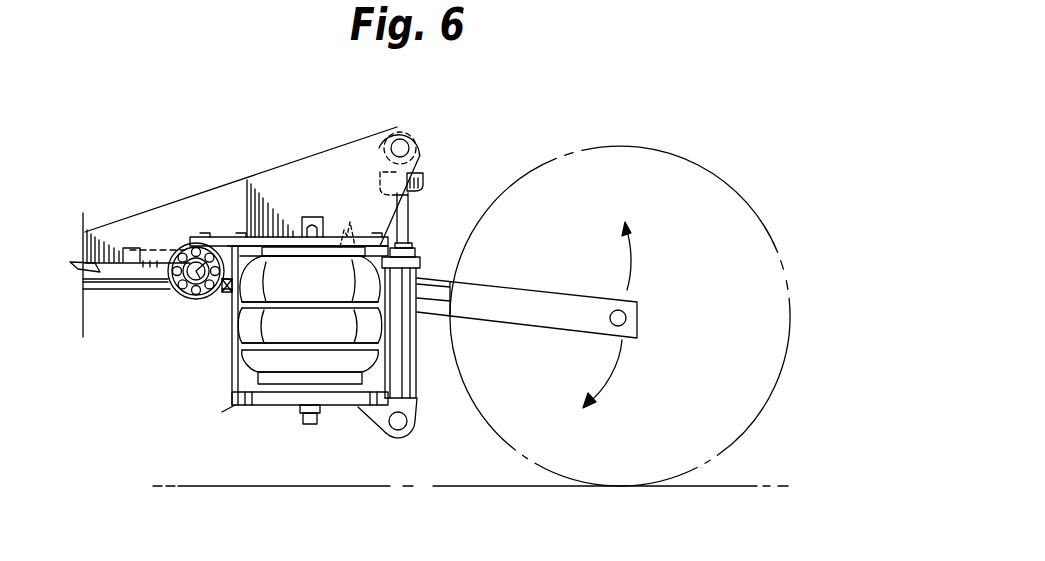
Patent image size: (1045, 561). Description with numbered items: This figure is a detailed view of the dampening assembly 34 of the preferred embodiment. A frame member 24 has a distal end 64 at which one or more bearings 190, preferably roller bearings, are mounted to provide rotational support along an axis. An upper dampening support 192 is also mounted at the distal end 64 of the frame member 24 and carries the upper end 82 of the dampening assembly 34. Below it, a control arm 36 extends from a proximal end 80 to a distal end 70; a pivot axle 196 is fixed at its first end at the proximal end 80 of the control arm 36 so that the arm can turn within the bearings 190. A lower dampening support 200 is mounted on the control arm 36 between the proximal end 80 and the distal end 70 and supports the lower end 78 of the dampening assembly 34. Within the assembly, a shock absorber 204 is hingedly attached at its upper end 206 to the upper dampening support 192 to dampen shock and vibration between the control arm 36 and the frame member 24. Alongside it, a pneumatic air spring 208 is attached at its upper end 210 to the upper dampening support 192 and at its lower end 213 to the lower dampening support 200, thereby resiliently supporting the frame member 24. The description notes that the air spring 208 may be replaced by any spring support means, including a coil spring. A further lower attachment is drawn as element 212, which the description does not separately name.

The frame member 24 is at (110, 297).
The dampening assembly 34 is at (440, 168).
The control arm 36 is at (436, 268).
The distal end 64 is at (160, 290).
The distal end 70 is at (636, 304).
The lower end 78 is at (338, 420).
The proximal end 80 is at (228, 298).
The upper end 82 is at (352, 167).
The bearings 190 is at (197, 300).
The upper dampening support 192 is at (293, 187).
The pivot axle 196 is at (172, 252).
The lower dampening support 200 is at (250, 405).
The shock absorber 204 is at (418, 384).
The upper end 206 is at (420, 141).
The pneumatic air spring 208 is at (237, 385).
The upper end 210 is at (293, 238).
The lower link 212 is at (412, 422).
The lower end 213 is at (298, 412).